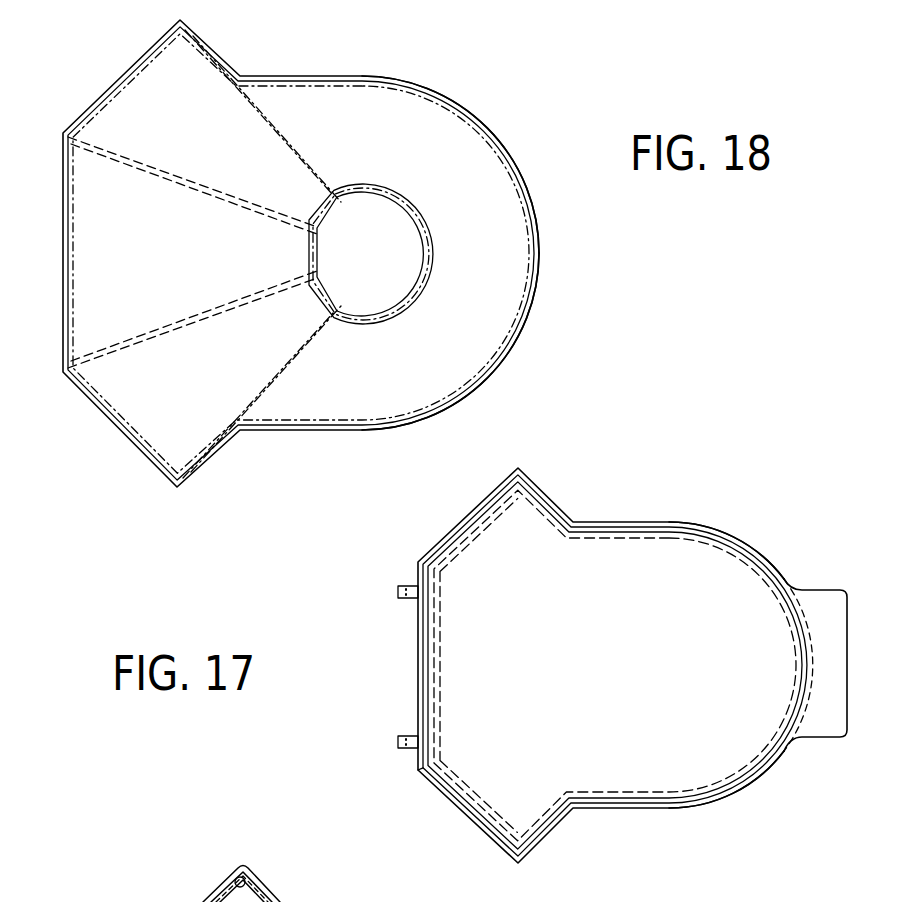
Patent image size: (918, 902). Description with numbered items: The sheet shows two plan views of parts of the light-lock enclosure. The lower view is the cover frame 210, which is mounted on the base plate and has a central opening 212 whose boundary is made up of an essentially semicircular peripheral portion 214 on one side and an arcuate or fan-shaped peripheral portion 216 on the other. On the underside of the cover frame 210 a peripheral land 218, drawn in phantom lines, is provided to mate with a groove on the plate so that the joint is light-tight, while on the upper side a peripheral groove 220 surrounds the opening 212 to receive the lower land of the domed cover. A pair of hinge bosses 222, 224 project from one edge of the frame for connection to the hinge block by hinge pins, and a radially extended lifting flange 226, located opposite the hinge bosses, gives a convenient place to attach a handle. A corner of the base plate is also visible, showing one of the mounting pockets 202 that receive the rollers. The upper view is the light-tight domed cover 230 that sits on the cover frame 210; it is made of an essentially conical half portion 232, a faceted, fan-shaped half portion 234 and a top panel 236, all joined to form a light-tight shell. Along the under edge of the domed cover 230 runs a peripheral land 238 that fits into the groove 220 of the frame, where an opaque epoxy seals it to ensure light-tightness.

In FIG. 17, the mounting pockets 202 is at (258, 871).
In FIG. 17, the cover frame 210 is at (808, 738).
In FIG. 17, the central opening 212 is at (630, 678).
In FIG. 17, the semicircular peripheral portion 214 is at (768, 588).
In FIG. 17, the arcuate or fan-shaped peripheral portion 216 is at (452, 625).
In FIG. 17, the peripheral land 218 is at (636, 516).
In FIG. 17, the peripheral groove 220 is at (433, 775).
In FIG. 17, the hinge boss 222 is at (398, 742).
In FIG. 17, the hinge boss 224 is at (398, 592).
In FIG. 17, the lifting flange 226 is at (818, 590).
In FIG. 18, the domed cover 230 is at (532, 303).
In FIG. 18, the conical half portion 232 is at (470, 170).
In FIG. 18, the faceted, fan-shaped half portion 234 is at (190, 267).
In FIG. 18, the top panel 236 is at (392, 250).
In FIG. 18, the peripheral land 238 is at (400, 418).